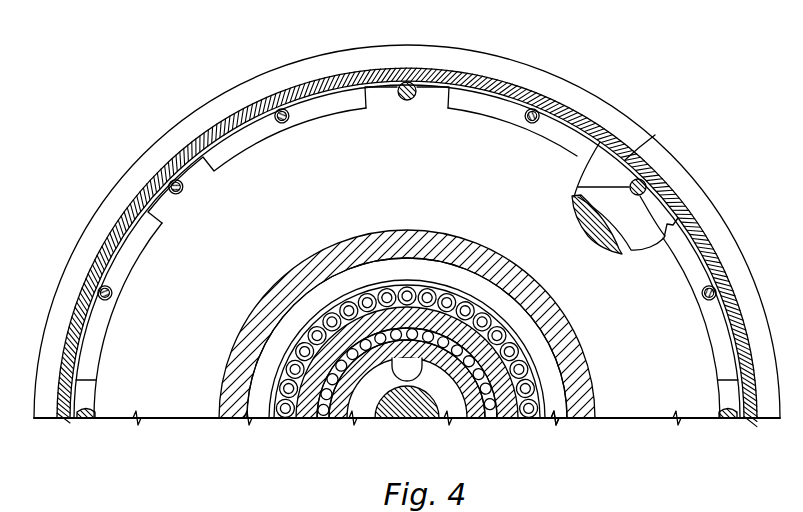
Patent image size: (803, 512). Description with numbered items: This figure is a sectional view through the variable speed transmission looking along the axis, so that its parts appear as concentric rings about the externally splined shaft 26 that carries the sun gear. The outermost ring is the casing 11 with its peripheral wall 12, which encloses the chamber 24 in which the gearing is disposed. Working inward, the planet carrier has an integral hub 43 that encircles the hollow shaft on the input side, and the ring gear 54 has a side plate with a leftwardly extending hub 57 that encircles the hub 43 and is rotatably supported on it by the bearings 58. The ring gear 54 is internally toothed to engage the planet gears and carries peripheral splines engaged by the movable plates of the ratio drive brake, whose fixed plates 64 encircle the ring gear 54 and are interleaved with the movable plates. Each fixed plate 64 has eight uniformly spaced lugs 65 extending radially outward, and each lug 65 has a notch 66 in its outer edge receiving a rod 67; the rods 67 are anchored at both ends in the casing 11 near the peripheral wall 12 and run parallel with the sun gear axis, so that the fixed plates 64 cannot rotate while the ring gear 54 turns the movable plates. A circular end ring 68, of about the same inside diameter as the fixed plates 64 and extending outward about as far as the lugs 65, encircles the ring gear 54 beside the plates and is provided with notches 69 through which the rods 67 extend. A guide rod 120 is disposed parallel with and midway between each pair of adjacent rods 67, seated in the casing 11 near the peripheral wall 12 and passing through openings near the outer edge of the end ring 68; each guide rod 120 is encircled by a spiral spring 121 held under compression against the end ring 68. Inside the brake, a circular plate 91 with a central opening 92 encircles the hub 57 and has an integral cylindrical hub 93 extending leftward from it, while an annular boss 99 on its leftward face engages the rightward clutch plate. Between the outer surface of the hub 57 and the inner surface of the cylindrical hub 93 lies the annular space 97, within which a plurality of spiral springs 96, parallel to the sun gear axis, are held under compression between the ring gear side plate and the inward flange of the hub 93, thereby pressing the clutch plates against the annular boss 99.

The casing 11 is at (590, 109).
The peripheral wall 12 is at (517, 80).
The chamber 24 is at (634, 153).
The externally splined shaft 26 is at (406, 415).
The hub 43 is at (338, 414).
The ring gear 54 is at (620, 250).
The hub 57 is at (320, 400).
The bearings 58 is at (490, 410).
The fixed plates 64 is at (366, 96).
The lugs 65 is at (433, 90).
The notch 66 is at (403, 81).
The rod 67 is at (646, 185).
The end ring 68 is at (597, 167).
The notches 69 is at (578, 188).
The circular plate 91 is at (215, 184).
The central opening 92 is at (537, 416).
The cylindrical hub 93 is at (251, 412).
The spiral springs 96 is at (524, 318).
The annular space 97 is at (486, 304).
The annular boss 99 is at (448, 245).
The guide rod 120 is at (100, 291).
The spiral spring 121 is at (98, 300).